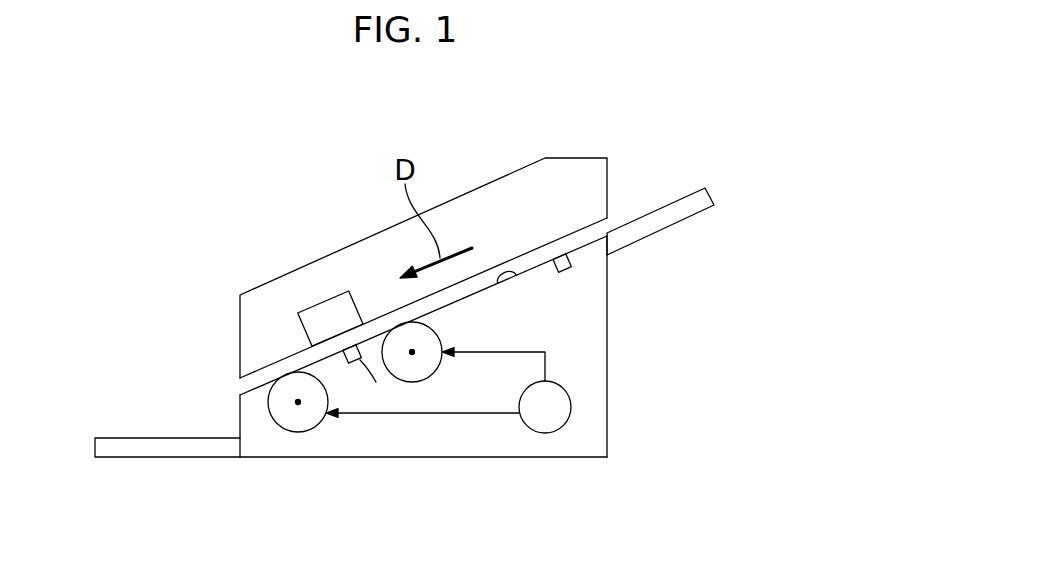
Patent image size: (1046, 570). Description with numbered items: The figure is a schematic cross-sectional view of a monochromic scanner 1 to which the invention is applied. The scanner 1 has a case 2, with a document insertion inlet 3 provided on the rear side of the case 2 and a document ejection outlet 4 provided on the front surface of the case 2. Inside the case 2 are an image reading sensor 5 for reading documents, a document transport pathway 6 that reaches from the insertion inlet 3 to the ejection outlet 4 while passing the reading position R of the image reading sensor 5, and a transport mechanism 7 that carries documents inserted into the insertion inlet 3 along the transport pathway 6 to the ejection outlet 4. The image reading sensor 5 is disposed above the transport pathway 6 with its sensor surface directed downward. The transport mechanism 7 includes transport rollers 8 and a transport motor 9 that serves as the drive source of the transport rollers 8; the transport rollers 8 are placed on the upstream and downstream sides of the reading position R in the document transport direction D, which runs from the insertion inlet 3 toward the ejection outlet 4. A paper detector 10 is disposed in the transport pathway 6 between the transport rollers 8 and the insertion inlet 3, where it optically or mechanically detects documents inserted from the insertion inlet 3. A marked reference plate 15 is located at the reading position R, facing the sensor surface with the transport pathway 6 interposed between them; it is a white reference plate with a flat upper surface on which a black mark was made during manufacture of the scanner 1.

The scanner 1 is at (222, 212).
The case 2 is at (485, 185).
The document insertion inlet 3 is at (608, 222).
The document ejection outlet 4 is at (237, 388).
The image reading sensor 5 is at (326, 288).
The document transport pathway 6 is at (517, 274).
The transport mechanism 7 is at (596, 428).
The transport rollers 8 is at (437, 343).
The transport motor 9 is at (545, 433).
The paper detector 10 is at (569, 264).
The marked reference plate 15 is at (323, 369).